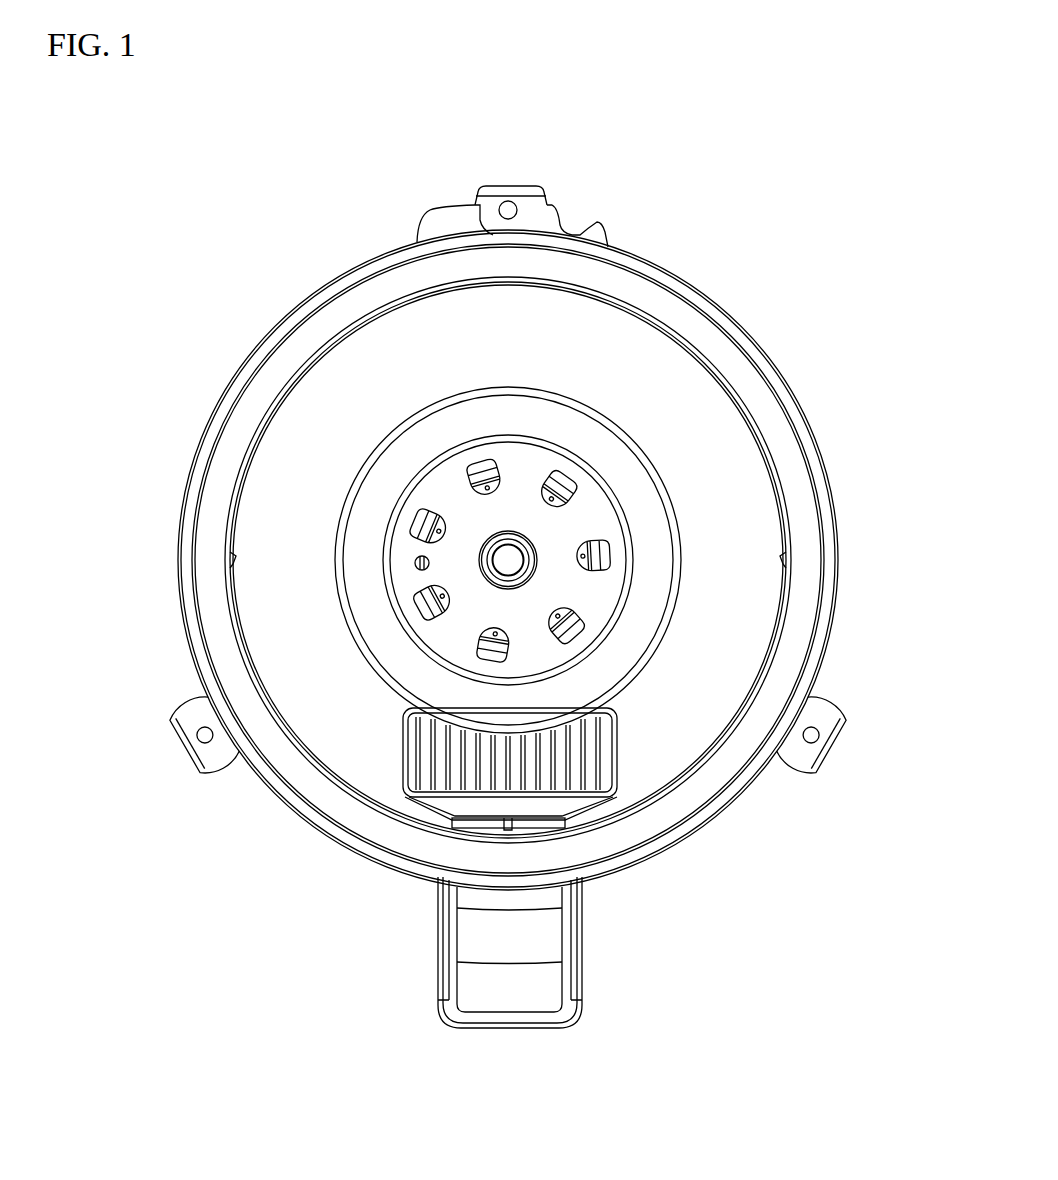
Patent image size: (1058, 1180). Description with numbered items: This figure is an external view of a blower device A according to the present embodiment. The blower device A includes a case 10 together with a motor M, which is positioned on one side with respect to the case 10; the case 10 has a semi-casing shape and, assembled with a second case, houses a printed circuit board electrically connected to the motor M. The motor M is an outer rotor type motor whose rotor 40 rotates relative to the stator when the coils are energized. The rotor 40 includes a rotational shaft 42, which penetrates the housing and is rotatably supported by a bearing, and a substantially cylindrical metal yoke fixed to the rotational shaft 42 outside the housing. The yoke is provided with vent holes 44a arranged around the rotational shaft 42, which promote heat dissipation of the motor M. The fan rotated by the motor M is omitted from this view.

The case 10 is at (703, 827).
The rotor 40 is at (388, 437).
The rotational shaft 42 is at (505, 568).
The vent holes 44a is at (410, 517).
The motor M is at (635, 410).
The blower device A is at (532, 105).